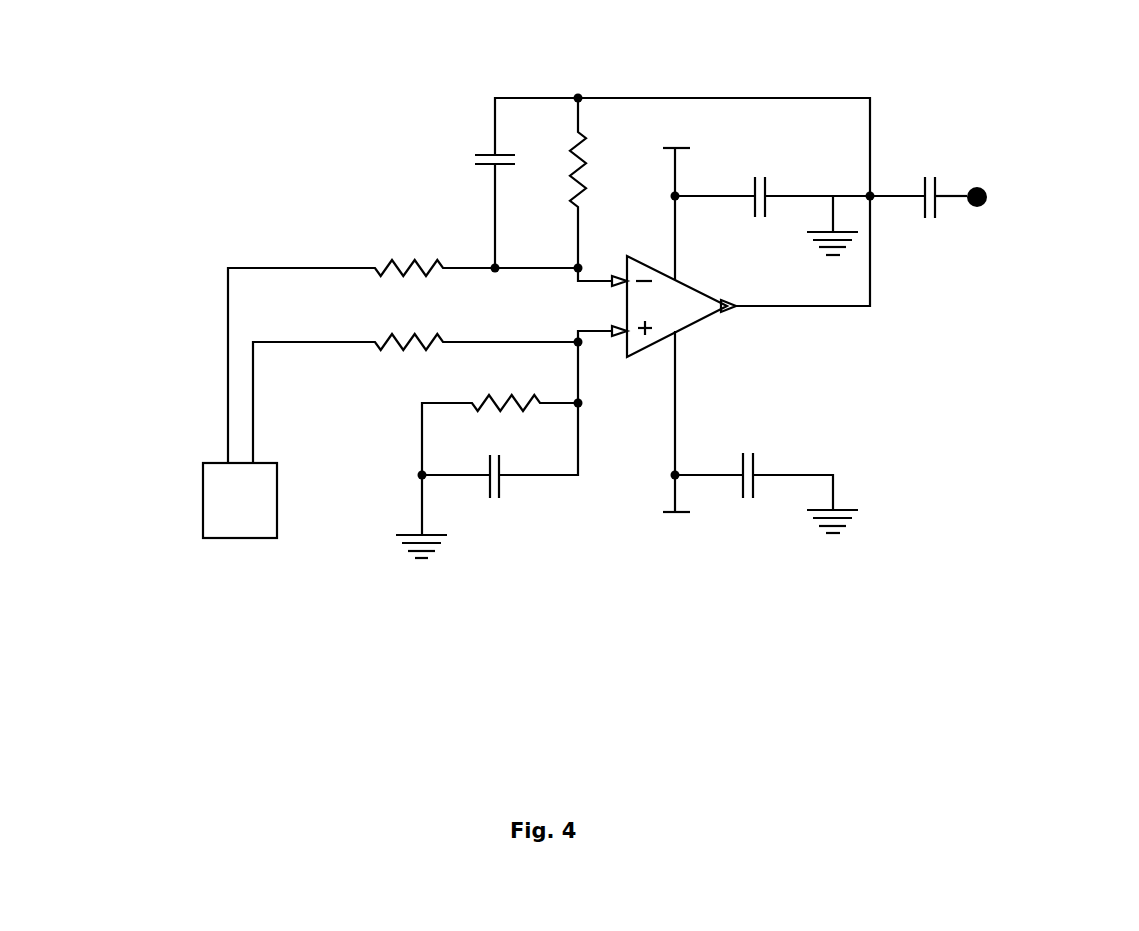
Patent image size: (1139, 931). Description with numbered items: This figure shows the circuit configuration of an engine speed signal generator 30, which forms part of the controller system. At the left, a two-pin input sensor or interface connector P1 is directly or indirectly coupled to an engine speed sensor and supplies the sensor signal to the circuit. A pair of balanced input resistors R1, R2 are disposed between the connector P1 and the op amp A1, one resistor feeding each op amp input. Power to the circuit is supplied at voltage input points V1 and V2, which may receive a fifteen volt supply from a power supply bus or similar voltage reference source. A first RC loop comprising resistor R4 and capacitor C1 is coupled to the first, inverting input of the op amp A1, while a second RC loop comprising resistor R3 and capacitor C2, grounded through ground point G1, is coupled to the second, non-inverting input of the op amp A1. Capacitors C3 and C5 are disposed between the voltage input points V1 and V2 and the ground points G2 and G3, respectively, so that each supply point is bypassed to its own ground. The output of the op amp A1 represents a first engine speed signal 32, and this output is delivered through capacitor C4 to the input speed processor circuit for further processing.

The engine speed signal generator 30 is at (305, 69).
The first engine speed signal 32 is at (1030, 198).
The balanced input resistor R1 is at (403, 349).
The balanced input resistor R2 is at (432, 392).
The resistor R3 is at (500, 454).
The resistor R4 is at (593, 189).
The capacitor C1 is at (510, 209).
The capacitor C2 is at (471, 456).
The capacitor C3 is at (772, 191).
The capacitor C4 is at (918, 183).
The capacitor C5 is at (754, 468).
The op amp A1 is at (668, 318).
The two-pin input sensor or interface connector P1 is at (252, 517).
The voltage input point V1 is at (675, 203).
The voltage input point V2 is at (675, 438).
The ground point G1 is at (421, 565).
The ground point G2 is at (832, 263).
The ground point G3 is at (832, 540).